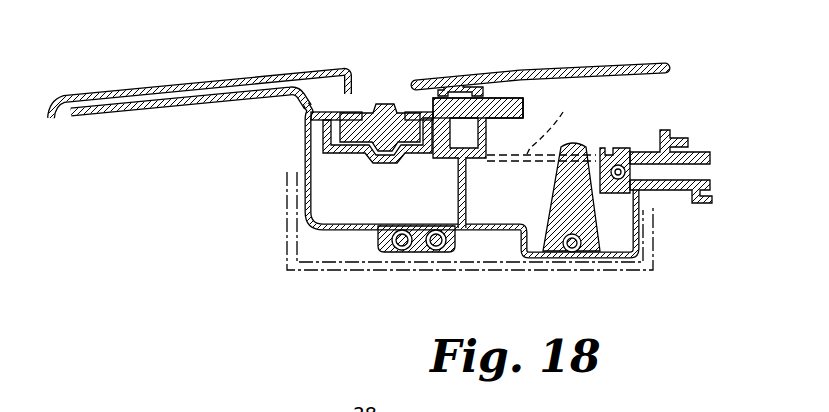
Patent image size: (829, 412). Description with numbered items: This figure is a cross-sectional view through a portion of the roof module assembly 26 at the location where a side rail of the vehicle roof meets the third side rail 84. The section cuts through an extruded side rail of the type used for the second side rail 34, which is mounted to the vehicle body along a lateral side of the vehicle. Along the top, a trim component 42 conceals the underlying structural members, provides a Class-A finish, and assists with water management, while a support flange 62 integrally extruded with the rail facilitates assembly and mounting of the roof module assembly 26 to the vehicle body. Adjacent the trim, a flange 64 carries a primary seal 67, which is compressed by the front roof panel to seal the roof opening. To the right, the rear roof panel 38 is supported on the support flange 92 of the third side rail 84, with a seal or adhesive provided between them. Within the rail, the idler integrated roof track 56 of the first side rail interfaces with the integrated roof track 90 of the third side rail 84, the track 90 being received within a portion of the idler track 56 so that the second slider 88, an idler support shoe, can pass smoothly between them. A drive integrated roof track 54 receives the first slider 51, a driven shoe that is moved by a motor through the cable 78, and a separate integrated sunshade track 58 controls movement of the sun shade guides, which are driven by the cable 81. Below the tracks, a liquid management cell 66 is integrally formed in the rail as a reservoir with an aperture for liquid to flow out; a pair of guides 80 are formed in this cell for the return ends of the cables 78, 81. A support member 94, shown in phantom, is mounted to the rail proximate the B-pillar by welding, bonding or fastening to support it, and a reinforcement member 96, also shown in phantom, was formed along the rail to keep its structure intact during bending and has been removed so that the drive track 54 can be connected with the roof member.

The roof module assembly 26 is at (228, 248).
The second side rail 34 is at (232, 150).
The rear roof panel 38 is at (608, 70).
The trim component 42 is at (215, 80).
The first slider 51 is at (592, 158).
The drive integrated roof track 54 is at (545, 237).
The idler integrated roof track 56 is at (407, 148).
The integrated sunshade track 58 is at (685, 180).
The support flange 62 is at (143, 98).
The flange 64 is at (498, 101).
The liquid management cell 66 is at (348, 190).
The primary seal 67 is at (458, 88).
The cable 78 is at (579, 246).
The guides 80 is at (443, 248).
The cable 81 is at (618, 170).
The third side rail 84 is at (404, 133).
The second slider 88 is at (383, 100).
The integrated roof track 90 is at (353, 128).
The support flange 92 is at (523, 100).
The support member 94 is at (653, 262).
The reinforcement member 96 is at (541, 125).